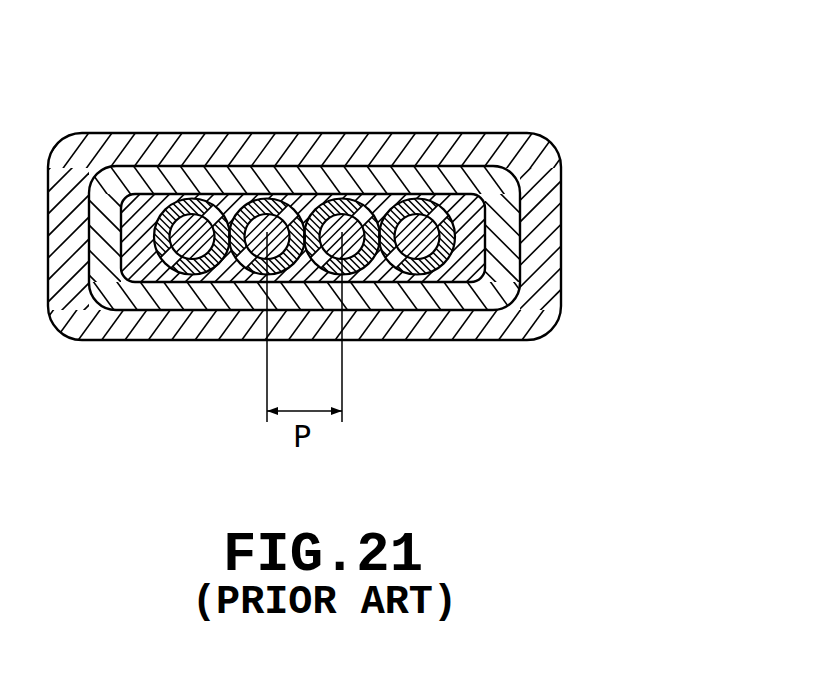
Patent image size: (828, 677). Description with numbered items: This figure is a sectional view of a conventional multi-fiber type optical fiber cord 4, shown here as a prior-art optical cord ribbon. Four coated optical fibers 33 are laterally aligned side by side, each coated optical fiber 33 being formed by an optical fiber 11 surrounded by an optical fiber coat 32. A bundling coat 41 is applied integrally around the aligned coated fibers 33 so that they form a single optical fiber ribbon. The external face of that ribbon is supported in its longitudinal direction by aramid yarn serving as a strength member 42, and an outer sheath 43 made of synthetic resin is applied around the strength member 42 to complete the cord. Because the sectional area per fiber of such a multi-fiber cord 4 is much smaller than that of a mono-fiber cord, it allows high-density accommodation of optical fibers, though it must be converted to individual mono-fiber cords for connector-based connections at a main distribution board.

The multi-fiber type optical fiber cord 4 is at (365, 198).
The outer sheath 43 is at (470, 142).
The strength member 42 is at (505, 202).
The bundling coat 41 is at (448, 273).
The coated optical fiber 33 is at (403, 255).
The optical fiber coat 32 is at (424, 252).
The optical fiber 11 is at (445, 271).